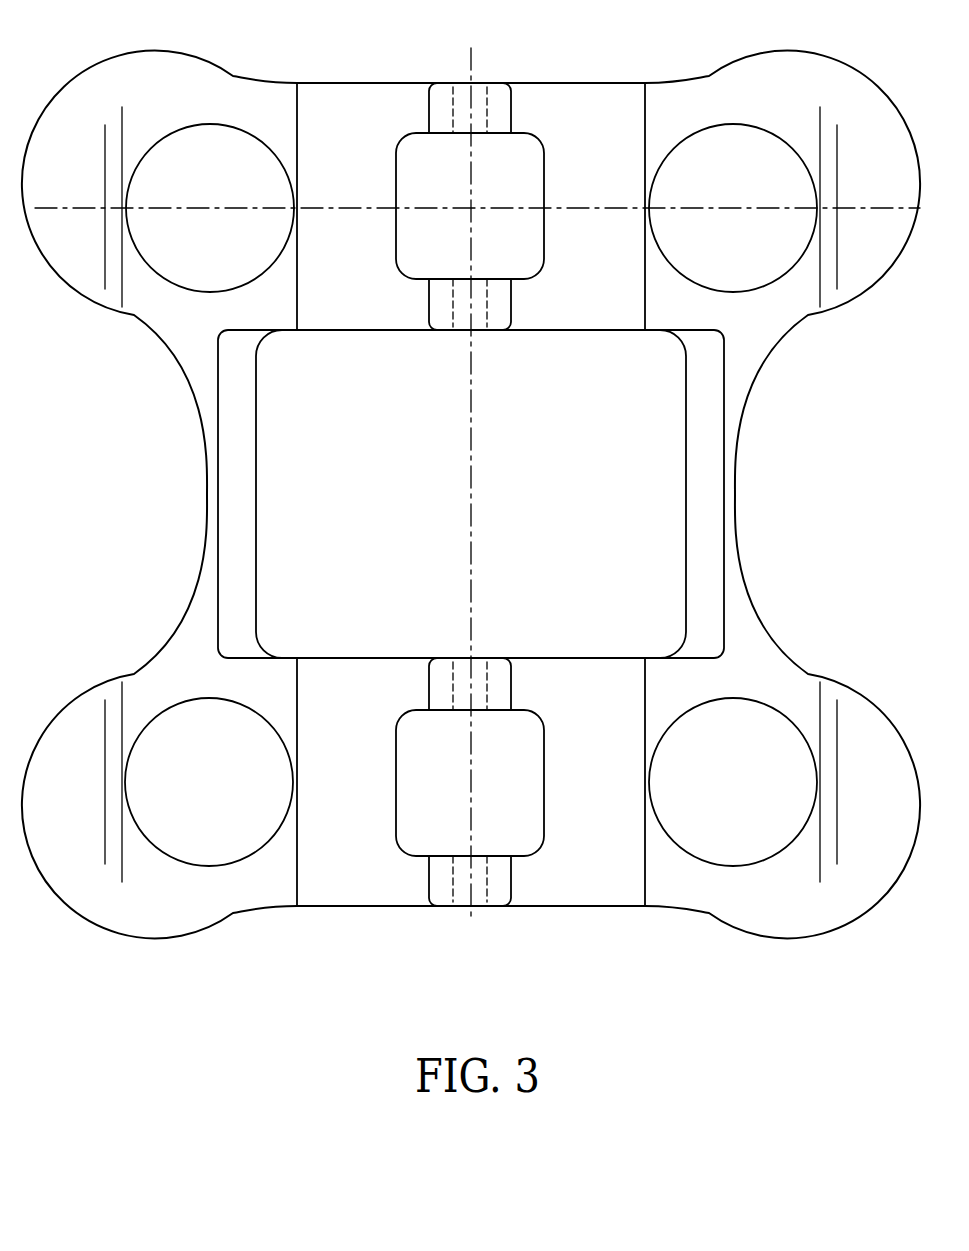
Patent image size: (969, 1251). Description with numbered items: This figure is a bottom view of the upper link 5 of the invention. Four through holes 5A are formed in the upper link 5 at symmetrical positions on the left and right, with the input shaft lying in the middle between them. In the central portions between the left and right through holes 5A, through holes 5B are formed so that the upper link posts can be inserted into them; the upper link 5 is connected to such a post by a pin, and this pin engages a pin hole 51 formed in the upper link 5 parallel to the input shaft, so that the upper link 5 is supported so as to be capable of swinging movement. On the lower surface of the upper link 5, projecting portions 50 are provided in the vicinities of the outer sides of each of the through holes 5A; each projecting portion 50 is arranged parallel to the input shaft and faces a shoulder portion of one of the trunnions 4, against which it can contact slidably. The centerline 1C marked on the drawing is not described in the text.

The upper link 5 is at (587, 60).
The through holes 5A is at (228, 128).
The through hole 5B is at (405, 155).
The projecting portions 50 is at (113, 128).
The pin hole 51 is at (481, 93).
The center axis line 1C is at (470, 917).
The trunnions 4 is at (46, 222).